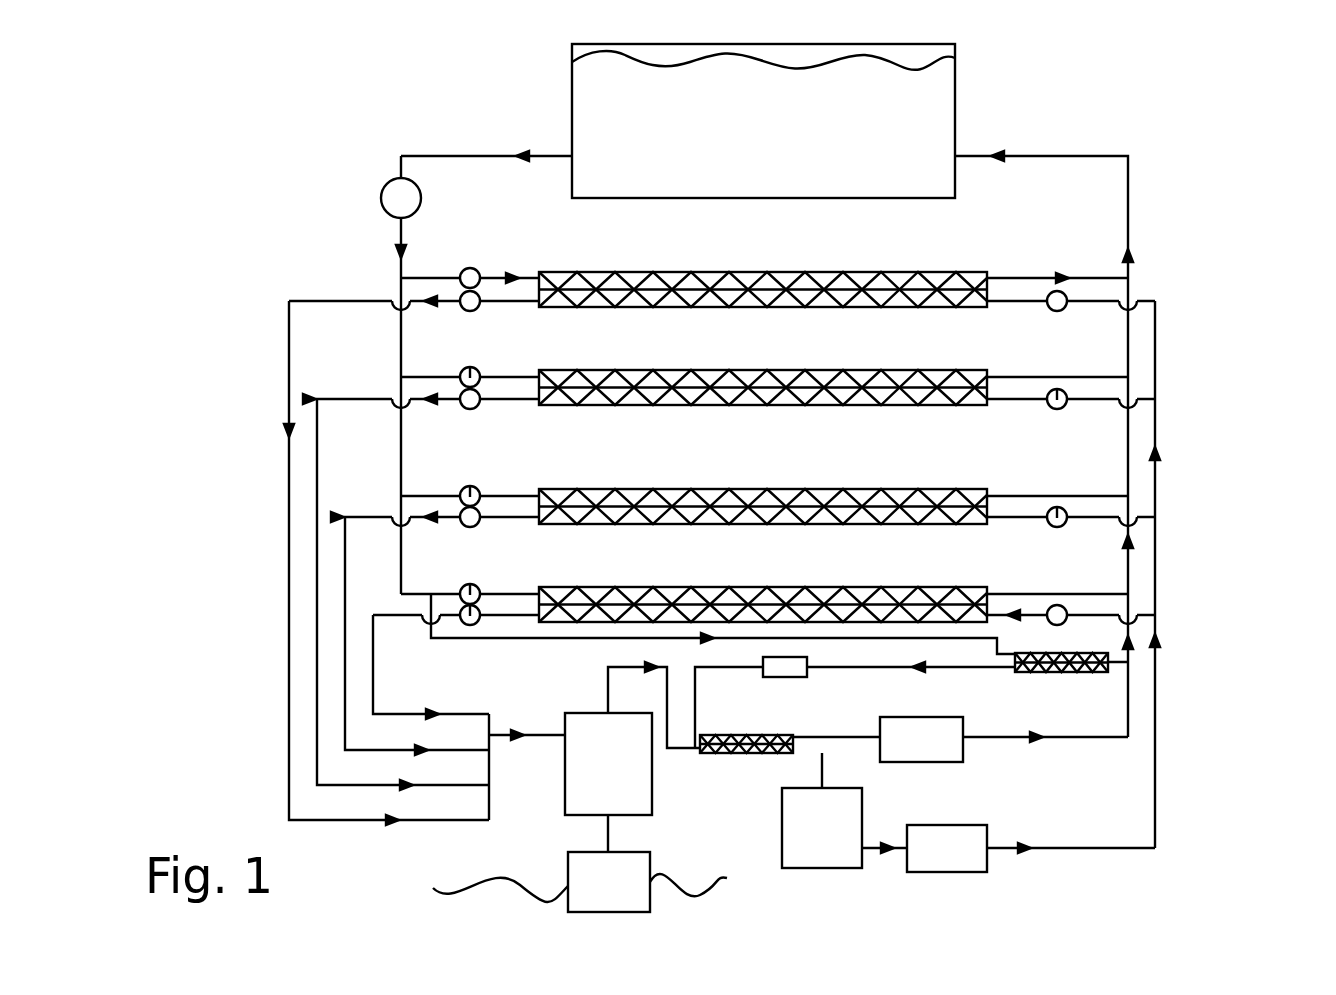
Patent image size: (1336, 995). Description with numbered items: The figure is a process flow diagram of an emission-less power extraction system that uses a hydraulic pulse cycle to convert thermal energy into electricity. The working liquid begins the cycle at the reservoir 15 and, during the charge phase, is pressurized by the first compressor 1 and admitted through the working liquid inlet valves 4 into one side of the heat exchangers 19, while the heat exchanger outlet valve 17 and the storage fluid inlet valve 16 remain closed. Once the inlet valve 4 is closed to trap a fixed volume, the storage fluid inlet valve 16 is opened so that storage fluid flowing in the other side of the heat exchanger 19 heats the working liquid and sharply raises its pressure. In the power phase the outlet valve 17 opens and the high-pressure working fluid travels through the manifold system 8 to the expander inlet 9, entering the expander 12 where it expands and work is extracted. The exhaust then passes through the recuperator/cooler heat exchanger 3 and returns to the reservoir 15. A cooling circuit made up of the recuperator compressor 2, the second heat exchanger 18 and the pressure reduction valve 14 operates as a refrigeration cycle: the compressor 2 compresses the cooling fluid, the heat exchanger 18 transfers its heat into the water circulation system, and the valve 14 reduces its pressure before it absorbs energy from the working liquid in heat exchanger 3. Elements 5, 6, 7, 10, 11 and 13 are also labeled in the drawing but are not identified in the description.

The first compressor 1 is at (953, 878).
The recuperator compressor 2 is at (927, 768).
The recuperator/cooler heat exchanger 3 is at (710, 760).
The working liquid inlet valve 4 is at (1074, 511).
The water return line 5 is at (1134, 231).
The water storage 6 is at (960, 84).
The pump 7 is at (377, 195).
The manifold system 8 is at (303, 396).
The expander inlet 9 is at (529, 745).
The electrical output line 10 is at (481, 886).
The DC generator 11 is at (602, 919).
The expander 12 is at (578, 728).
The electrical output line 13 is at (717, 877).
The pressure reduction valve 14 is at (792, 678).
The reservoir 15 is at (832, 878).
The storage fluid inlet valve 16 is at (440, 272).
The heat exchanger outlet valve 17 is at (452, 392).
The second heat exchanger 18 is at (1114, 662).
The first heat exchanger 19 is at (767, 270).